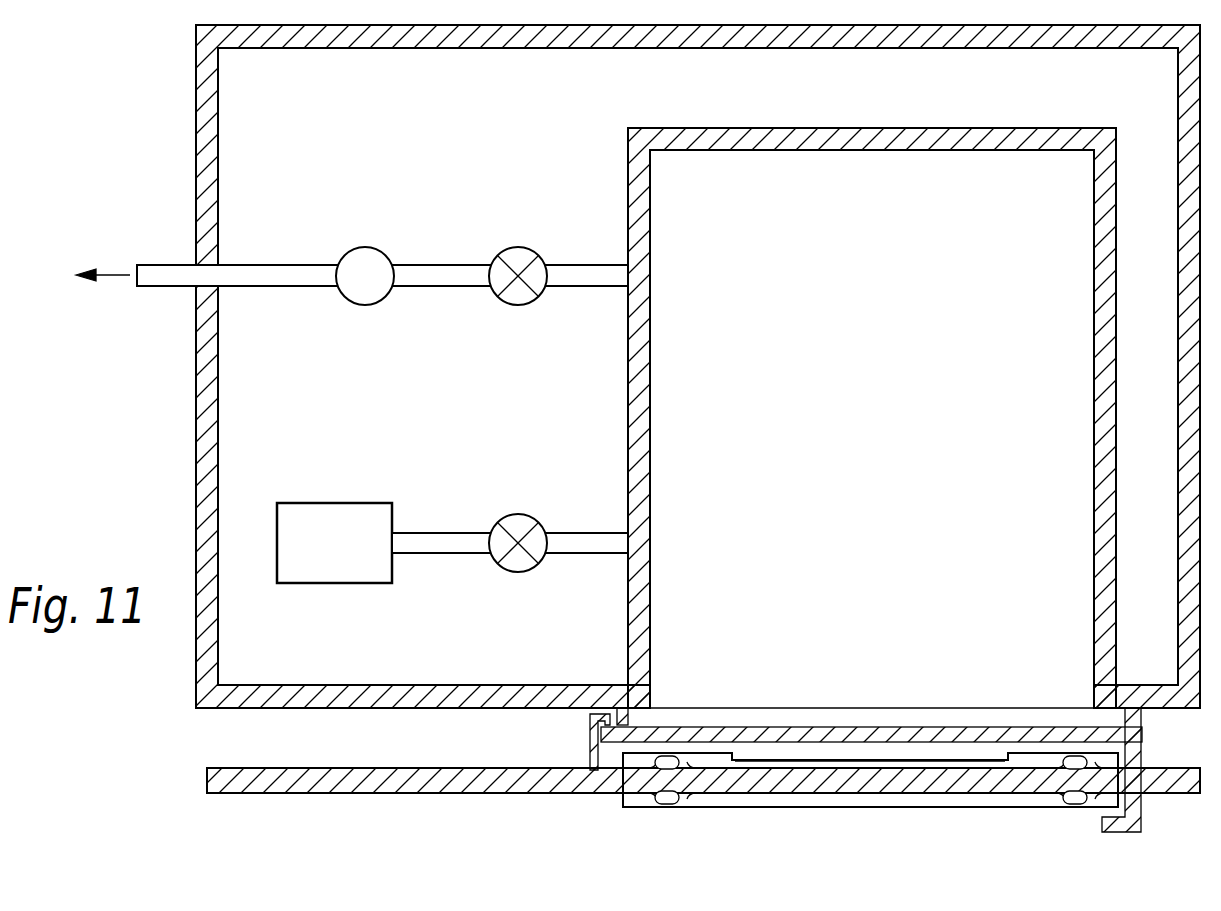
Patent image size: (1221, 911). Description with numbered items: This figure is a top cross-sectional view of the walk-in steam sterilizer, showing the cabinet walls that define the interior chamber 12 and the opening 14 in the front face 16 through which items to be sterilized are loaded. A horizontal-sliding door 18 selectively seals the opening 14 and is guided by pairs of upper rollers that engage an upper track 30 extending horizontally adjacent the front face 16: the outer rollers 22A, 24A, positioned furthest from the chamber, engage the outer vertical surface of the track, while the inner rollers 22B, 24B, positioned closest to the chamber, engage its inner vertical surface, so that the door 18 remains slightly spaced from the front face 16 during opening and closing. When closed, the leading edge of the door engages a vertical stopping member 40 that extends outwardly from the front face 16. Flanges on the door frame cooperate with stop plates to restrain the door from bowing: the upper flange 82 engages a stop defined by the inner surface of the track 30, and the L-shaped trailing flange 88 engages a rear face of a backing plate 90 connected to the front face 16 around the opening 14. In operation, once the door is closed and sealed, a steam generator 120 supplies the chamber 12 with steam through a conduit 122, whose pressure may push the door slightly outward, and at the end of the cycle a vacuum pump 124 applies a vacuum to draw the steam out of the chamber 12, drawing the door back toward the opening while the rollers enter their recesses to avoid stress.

The interior chamber 12 is at (892, 324).
The opening 14 is at (937, 652).
The front face 16 is at (297, 708).
The horizontal-sliding door 18 is at (635, 809).
The outer leading roller 22A is at (1074, 806).
The inner leading roller 22B is at (1072, 757).
The outer trailing roller 24A is at (667, 806).
The inner trailing roller 24B is at (668, 758).
The upper track 30 is at (370, 795).
The vertical stopping member 40 is at (1115, 823).
The upper flange 82 is at (823, 762).
The trailing L-shaped flange 88 is at (591, 752).
The backing plate 90 is at (843, 727).
The steam generator 120 is at (355, 559).
The conduit 122 is at (583, 531).
The vacuum pump 124 is at (362, 247).